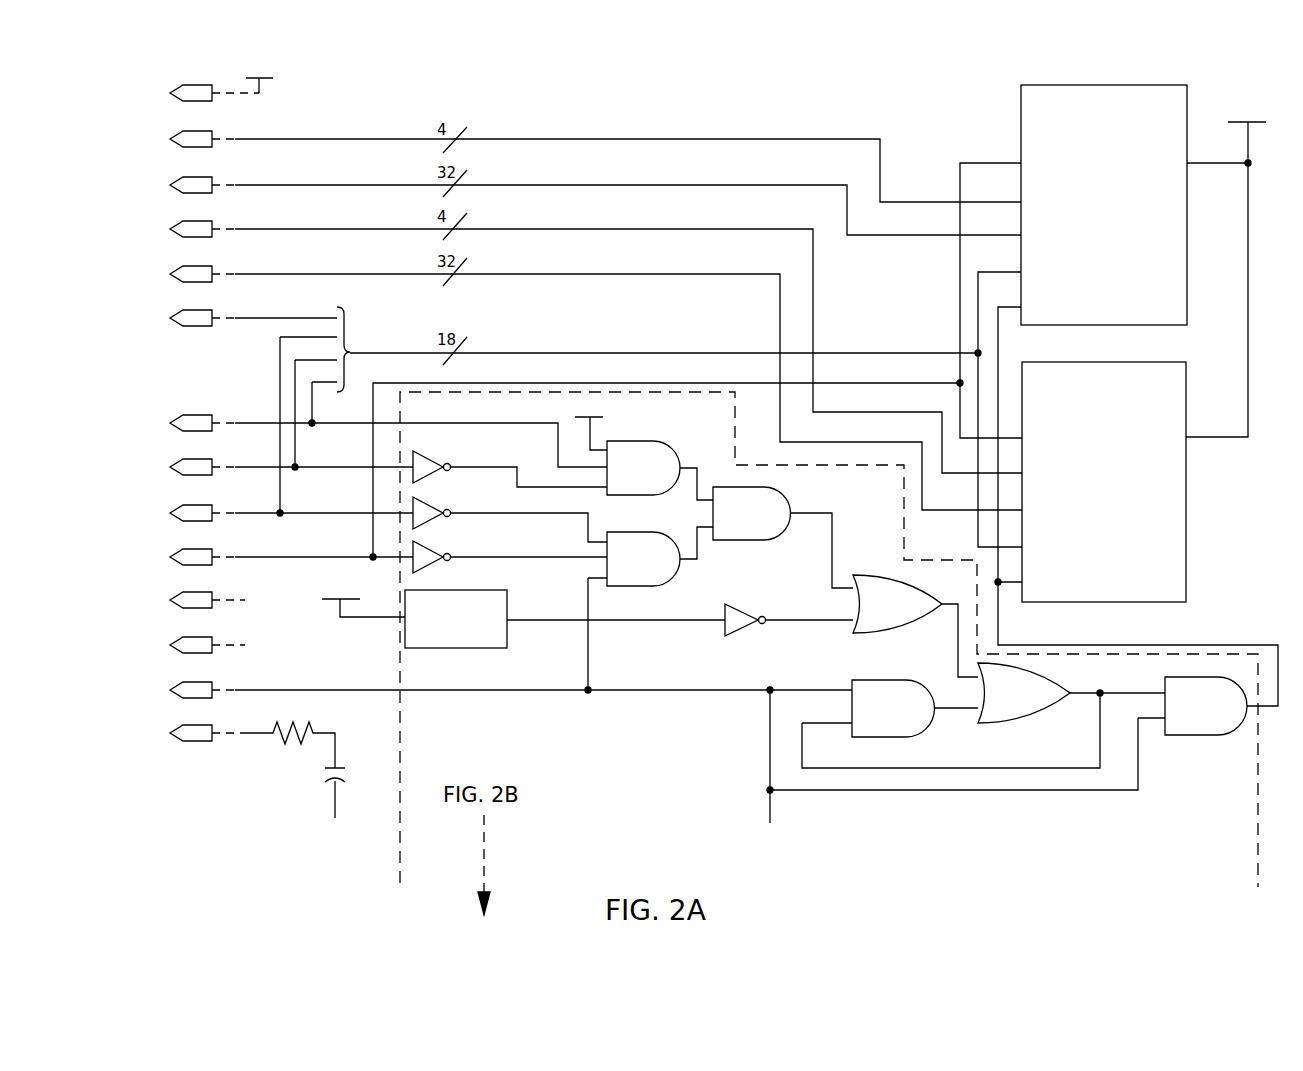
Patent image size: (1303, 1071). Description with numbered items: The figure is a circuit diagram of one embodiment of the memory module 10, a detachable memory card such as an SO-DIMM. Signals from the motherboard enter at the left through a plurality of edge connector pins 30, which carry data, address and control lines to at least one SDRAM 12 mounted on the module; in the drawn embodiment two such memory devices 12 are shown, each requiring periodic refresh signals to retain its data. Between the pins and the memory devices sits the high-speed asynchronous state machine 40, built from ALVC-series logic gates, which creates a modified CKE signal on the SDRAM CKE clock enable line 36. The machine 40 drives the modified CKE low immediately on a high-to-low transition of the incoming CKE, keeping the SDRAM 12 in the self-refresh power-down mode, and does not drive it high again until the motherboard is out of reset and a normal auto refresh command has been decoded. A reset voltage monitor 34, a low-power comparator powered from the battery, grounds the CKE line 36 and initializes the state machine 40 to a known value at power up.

The memory module 10 is at (1218, 880).
The SDRAM 12 is at (1033, 113).
The edge connector pins 30 is at (133, 247).
The reset voltage monitor 34 is at (405, 636).
The CKE clock enable line 36 is at (425, 690).
The asynchronous state machine 40 is at (398, 866).